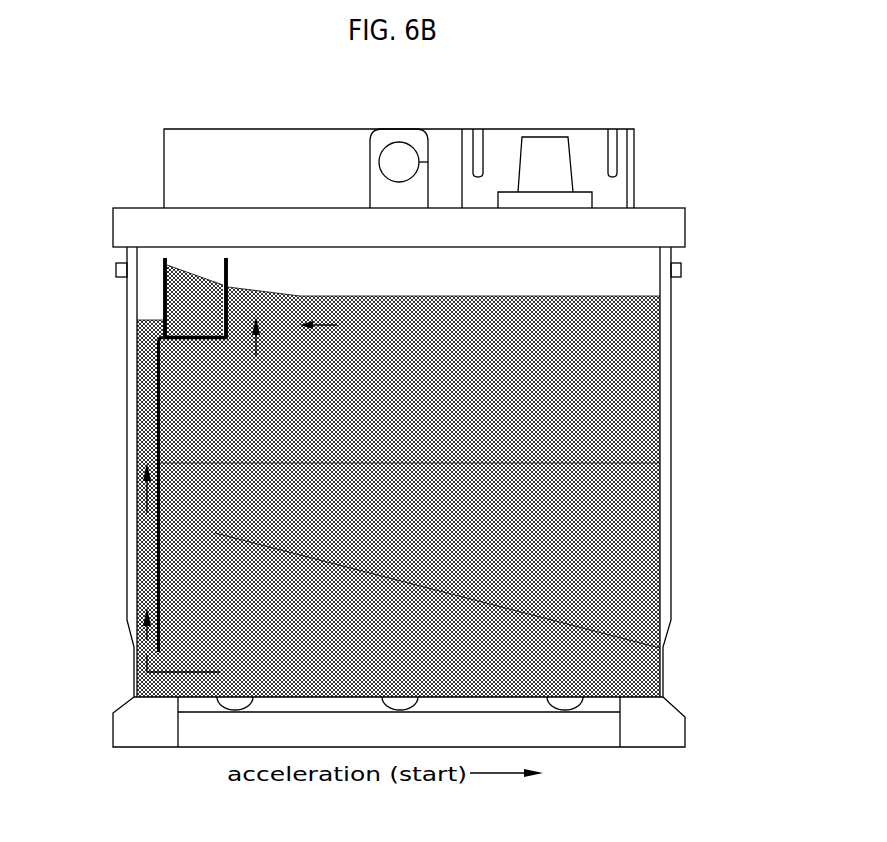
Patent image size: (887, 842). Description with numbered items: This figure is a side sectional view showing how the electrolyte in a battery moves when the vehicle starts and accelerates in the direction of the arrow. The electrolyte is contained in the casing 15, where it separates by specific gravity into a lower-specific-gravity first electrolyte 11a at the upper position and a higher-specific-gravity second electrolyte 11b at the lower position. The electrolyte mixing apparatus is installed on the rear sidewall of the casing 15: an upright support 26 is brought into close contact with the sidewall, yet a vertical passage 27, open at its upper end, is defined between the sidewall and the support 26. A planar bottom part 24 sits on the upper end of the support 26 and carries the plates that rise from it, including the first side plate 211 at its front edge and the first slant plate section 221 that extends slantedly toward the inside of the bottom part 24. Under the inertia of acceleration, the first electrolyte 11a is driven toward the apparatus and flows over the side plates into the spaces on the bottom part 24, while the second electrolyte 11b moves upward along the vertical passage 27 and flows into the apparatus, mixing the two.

The casing 15 is at (127, 430).
The first electrolyte 11a is at (637, 356).
The second electrolyte 11b is at (650, 648).
The bottom part 24 is at (200, 340).
The first side plate 211 is at (229, 282).
The first slant plate section 221 is at (164, 269).
The vertical passage 27 is at (148, 577).
The support 26 is at (160, 642).